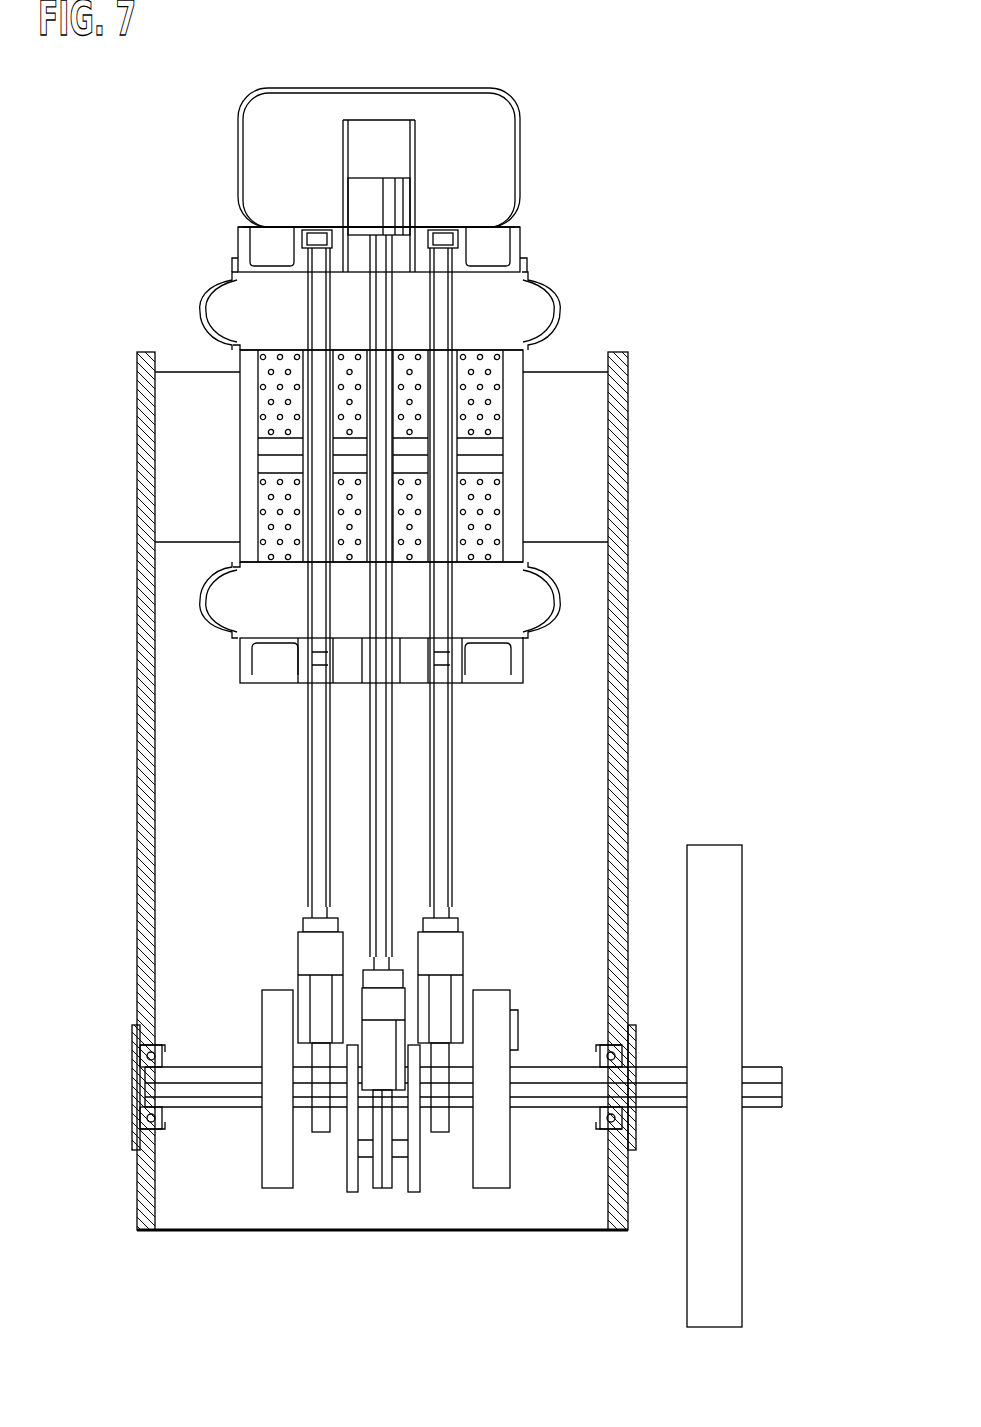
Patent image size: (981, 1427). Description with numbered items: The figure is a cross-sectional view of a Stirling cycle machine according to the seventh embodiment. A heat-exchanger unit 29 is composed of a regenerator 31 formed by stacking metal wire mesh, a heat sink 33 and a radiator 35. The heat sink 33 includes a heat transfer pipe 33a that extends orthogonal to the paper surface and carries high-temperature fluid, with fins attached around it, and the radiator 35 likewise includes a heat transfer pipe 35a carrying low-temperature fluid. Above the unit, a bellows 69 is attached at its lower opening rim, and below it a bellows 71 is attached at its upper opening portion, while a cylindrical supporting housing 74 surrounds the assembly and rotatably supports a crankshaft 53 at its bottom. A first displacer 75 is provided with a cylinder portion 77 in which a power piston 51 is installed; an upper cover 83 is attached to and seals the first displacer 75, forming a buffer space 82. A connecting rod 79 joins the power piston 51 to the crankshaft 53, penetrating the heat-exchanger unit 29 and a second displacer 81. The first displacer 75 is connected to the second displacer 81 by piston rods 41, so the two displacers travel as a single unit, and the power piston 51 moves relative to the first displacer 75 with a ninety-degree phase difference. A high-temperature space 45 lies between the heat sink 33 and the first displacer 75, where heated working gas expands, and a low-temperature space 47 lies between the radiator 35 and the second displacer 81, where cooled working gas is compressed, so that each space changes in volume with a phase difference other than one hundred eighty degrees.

The heat-exchanger unit 29 is at (278, 454).
The regenerator 31 is at (258, 456).
The heat sink 33 is at (258, 396).
The heat transfer pipe 33a is at (258, 356).
The radiator 35 is at (258, 519).
The heat transfer pipe 35a is at (163, 577).
The piston rods 41 is at (315, 301).
The high-temperature space 45 is at (525, 311).
The low-temperature space 47 is at (520, 604).
The power piston 51 is at (372, 186).
The crankshaft 53 is at (212, 1077).
The bellows 69 is at (546, 284).
The bellows 71 is at (548, 569).
The supporting housing 74 is at (622, 663).
The first displacer 75 is at (240, 240).
The cylinder portion 77 is at (420, 163).
The connecting rod 79 is at (388, 876).
The second displacer 81 is at (493, 676).
The buffer space 82 is at (262, 158).
The upper cover 83 is at (405, 87).